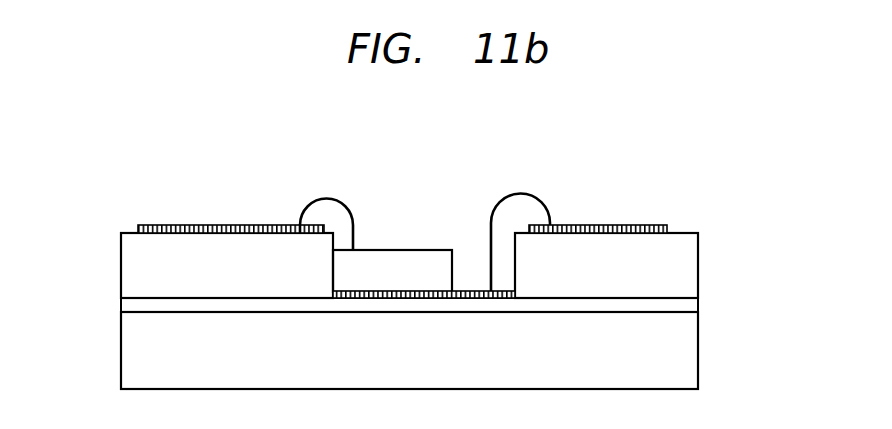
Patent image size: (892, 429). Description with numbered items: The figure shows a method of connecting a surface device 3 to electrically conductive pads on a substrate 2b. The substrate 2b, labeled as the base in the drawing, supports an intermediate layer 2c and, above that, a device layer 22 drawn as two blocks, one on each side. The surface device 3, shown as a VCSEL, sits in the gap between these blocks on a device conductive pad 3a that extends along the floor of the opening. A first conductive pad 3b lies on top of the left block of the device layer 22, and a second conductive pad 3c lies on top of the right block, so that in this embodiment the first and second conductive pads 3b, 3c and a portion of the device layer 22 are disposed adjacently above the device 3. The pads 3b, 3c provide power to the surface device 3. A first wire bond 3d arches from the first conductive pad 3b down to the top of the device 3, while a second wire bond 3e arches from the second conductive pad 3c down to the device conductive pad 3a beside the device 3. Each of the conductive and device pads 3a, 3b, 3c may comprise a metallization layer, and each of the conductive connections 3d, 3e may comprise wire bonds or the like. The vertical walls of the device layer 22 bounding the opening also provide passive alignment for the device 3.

The substrate 2b is at (698, 358).
The insulating layer 2c is at (698, 305).
The device layer 22 is at (121, 263).
The surface device 3 is at (420, 250).
The device conductive pad 3a is at (481, 291).
The first conductive pad 3b is at (224, 225).
The second conductive pad 3c is at (630, 225).
The first wire bond 3d is at (329, 197).
The second wire bond 3e is at (519, 193).